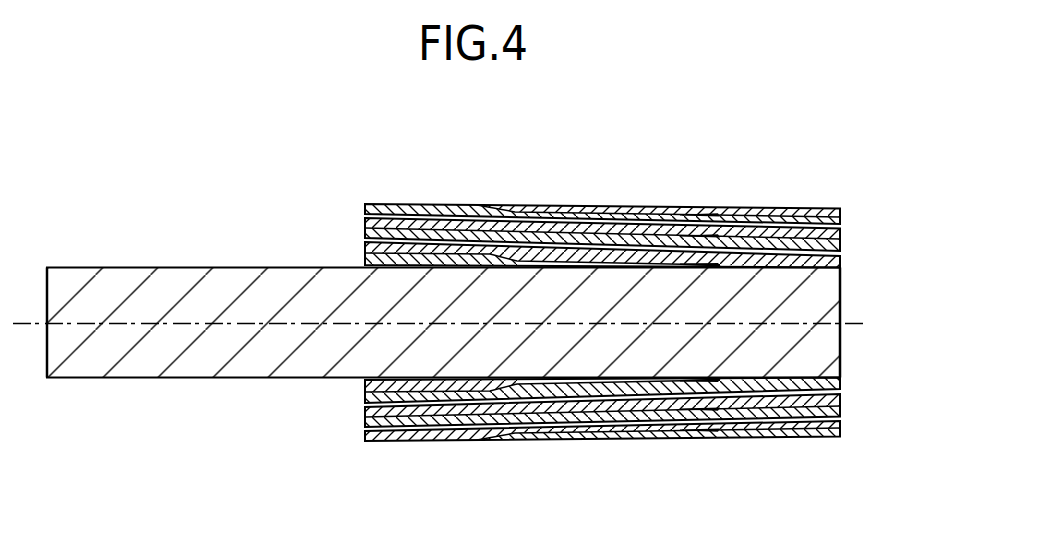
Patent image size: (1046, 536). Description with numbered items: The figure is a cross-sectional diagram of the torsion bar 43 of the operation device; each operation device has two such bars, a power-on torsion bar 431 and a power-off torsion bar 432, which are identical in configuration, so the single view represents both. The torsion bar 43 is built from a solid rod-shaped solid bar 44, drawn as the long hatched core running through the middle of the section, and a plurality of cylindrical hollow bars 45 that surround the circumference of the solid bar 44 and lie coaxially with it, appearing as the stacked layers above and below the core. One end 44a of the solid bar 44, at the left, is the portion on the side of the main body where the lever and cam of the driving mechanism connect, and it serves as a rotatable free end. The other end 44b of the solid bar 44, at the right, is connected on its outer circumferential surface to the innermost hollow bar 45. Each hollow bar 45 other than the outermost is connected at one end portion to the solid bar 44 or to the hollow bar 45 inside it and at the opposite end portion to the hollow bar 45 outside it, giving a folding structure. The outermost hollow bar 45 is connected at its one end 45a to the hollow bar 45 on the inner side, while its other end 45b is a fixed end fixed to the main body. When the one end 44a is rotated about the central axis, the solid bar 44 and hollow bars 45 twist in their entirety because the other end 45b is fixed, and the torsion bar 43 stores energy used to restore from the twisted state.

The torsion bar 43 is at (605, 302).
The power-on torsion bar 431 is at (602, 236).
The power-off torsion bar 432 is at (605, 418).
The solid bar 44 is at (230, 280).
The one end of the solid bar 44a is at (46, 300).
The other end of the solid bar 44b is at (842, 286).
The hollow bar 45 is at (380, 398).
The one end of the outermost hollow bar 45a is at (843, 432).
The other end of the outermost hollow bar 45b is at (365, 437).